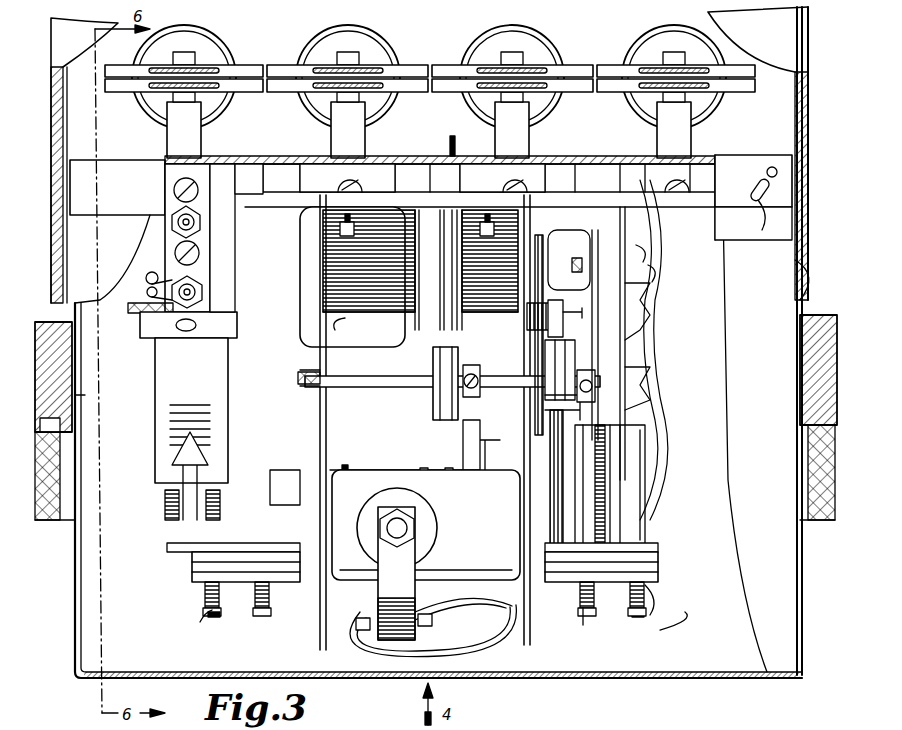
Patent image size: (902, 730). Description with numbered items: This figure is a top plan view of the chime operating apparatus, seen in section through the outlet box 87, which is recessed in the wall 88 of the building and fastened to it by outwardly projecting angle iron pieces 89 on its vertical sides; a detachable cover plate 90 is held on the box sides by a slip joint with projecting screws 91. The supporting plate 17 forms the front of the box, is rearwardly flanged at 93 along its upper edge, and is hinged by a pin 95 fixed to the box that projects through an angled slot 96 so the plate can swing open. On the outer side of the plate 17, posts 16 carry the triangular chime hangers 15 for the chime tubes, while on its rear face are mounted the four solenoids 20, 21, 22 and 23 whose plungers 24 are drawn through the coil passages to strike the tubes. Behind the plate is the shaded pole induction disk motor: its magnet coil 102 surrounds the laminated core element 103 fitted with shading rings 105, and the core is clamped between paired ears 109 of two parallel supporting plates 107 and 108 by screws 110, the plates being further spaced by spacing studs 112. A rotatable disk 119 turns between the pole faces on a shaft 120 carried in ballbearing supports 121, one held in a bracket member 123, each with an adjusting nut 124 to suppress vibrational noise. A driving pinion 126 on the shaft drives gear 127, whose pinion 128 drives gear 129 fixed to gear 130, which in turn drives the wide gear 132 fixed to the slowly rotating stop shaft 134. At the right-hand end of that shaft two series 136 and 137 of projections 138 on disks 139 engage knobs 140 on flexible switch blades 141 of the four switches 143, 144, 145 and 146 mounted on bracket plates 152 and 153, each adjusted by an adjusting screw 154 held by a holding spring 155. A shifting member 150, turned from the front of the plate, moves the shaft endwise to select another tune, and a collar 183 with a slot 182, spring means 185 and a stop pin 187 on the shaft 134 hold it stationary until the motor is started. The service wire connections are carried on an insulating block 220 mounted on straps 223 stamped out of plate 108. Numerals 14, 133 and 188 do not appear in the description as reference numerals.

The top plate 14 is at (440, 197).
The chime hanger 15 is at (262, 70).
The post 16 is at (190, 145).
The supporting plate 17 is at (125, 162).
The solenoid 20 is at (690, 168).
The solenoid 21 is at (545, 172).
The solenoid 22 is at (385, 172).
The solenoid 23 is at (240, 172).
The plunger 24 is at (238, 78).
The outlet box 87 is at (77, 560).
The wall 88 is at (436, 417).
The angle iron piece 89 is at (78, 398).
The cover plate 90 is at (809, 118).
The projecting screw 91 is at (810, 262).
The rearward flange 93 is at (138, 185).
The pin 95 is at (770, 168).
The slot 96 is at (761, 222).
The magnet coil 102 is at (383, 330).
The laminated core element 103 is at (380, 305).
The shading ring 105 is at (448, 318).
The supporting plate 107 is at (328, 448).
The supporting plate 108 is at (530, 640).
The tab or ear 109 is at (505, 232).
The screw 110 is at (350, 325).
The spacing stud 112 is at (470, 570).
The rotatable disk 119 is at (440, 440).
The shaft 120 is at (390, 388).
The ballbearing support 121 is at (585, 385).
The bracket member 123 is at (575, 365).
The adjusting nut 124 is at (583, 372).
The driving pinion 126 is at (545, 395).
The gear 127 is at (547, 262).
The pinion 128 is at (523, 270).
The gear 129 is at (535, 340).
The gear 130 is at (545, 365).
The wide gear 132 is at (548, 512).
The hub 133 is at (456, 383).
The stop shaft 134 is at (505, 490).
The series of projections 136 is at (585, 445).
The series of projections 137 is at (585, 512).
The projection 138 is at (585, 470).
The disk 139 is at (220, 500).
The knob 140 is at (628, 600).
The flexible switch blade 141 is at (575, 582).
The switch 143 is at (650, 575).
The switch 144 is at (590, 600).
The switch 145 is at (275, 580).
The switch 146 is at (226, 580).
The shifting member 150 is at (475, 448).
The bracket plate 152 is at (652, 598).
The bracket plate 153 is at (198, 582).
The adjusting screw 154 is at (208, 615).
The holding spring 155 is at (196, 625).
The slot 182 is at (382, 480).
The collar 183 is at (400, 478).
The spring means 185 is at (365, 478).
The stop pin 187 is at (345, 475).
The contact spring 188 is at (400, 470).
The insulating block 220 is at (608, 262).
The strap 223 is at (570, 280).